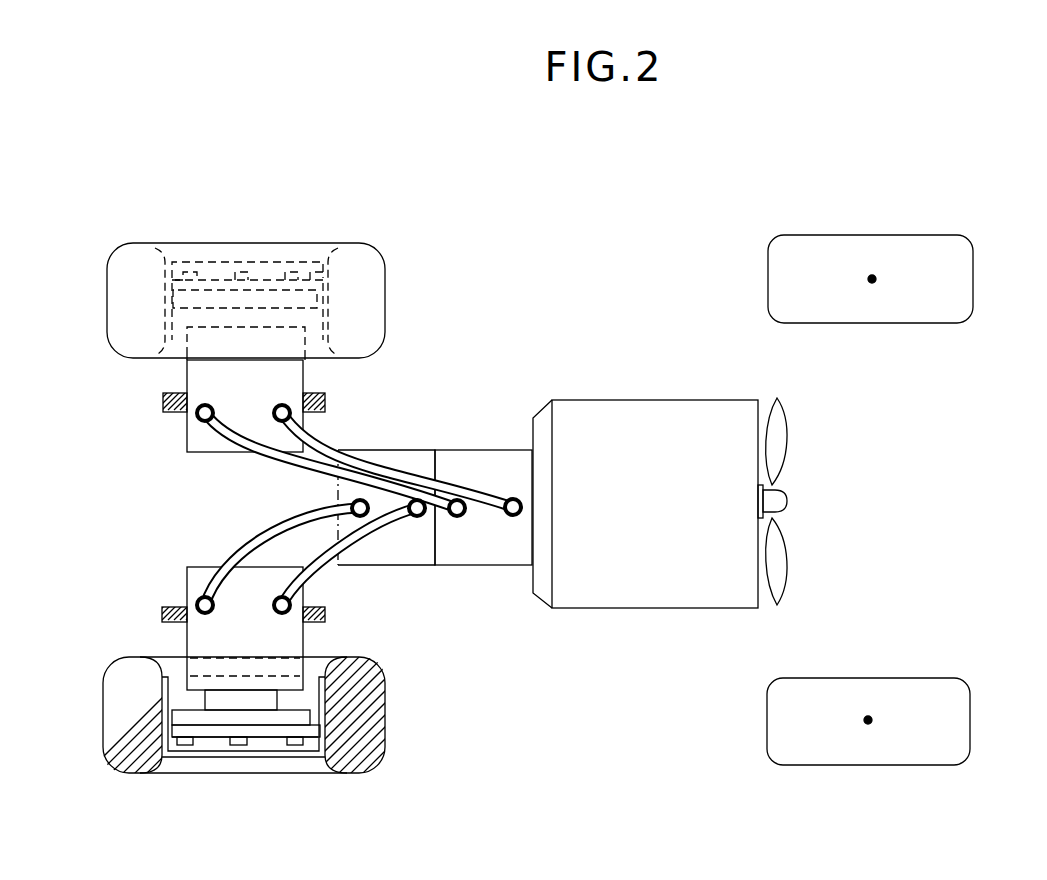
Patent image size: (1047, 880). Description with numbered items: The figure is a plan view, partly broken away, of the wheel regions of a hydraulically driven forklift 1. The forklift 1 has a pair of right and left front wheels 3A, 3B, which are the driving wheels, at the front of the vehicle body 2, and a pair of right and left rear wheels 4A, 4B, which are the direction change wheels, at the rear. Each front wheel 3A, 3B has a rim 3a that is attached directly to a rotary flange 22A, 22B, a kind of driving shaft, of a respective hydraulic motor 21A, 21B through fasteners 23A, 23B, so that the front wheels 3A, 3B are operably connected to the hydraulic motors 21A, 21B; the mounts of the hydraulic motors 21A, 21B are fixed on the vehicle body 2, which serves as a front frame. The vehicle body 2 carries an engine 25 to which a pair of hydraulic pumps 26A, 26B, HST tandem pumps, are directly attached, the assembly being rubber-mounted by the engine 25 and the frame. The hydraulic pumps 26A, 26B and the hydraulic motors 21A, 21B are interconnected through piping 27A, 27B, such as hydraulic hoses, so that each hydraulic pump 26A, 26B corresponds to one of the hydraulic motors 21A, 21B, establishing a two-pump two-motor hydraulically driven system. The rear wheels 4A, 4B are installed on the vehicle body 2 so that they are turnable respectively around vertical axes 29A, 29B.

The forklift 1 is at (975, 198).
The vehicle body 2 is at (158, 400).
The front wheel 3A is at (340, 762).
The front wheel 3B is at (383, 253).
The rim 3a is at (275, 283).
The rear wheel 4A is at (937, 688).
The rear wheel 4B is at (918, 265).
The hydraulic motor 21A is at (192, 583).
The hydraulic motor 21B is at (195, 378).
The rotary flange 22A is at (253, 703).
The rotary flange 22B is at (222, 283).
The fastener 23A is at (180, 742).
The fastener 23B is at (305, 270).
The engine 25 is at (634, 605).
The hydraulic pump 26A is at (390, 568).
The hydraulic pump 26B is at (481, 568).
The piping 27A is at (320, 560).
The piping 27B is at (387, 480).
The vertical axis 29A is at (868, 716).
The vertical axis 29B is at (872, 283).